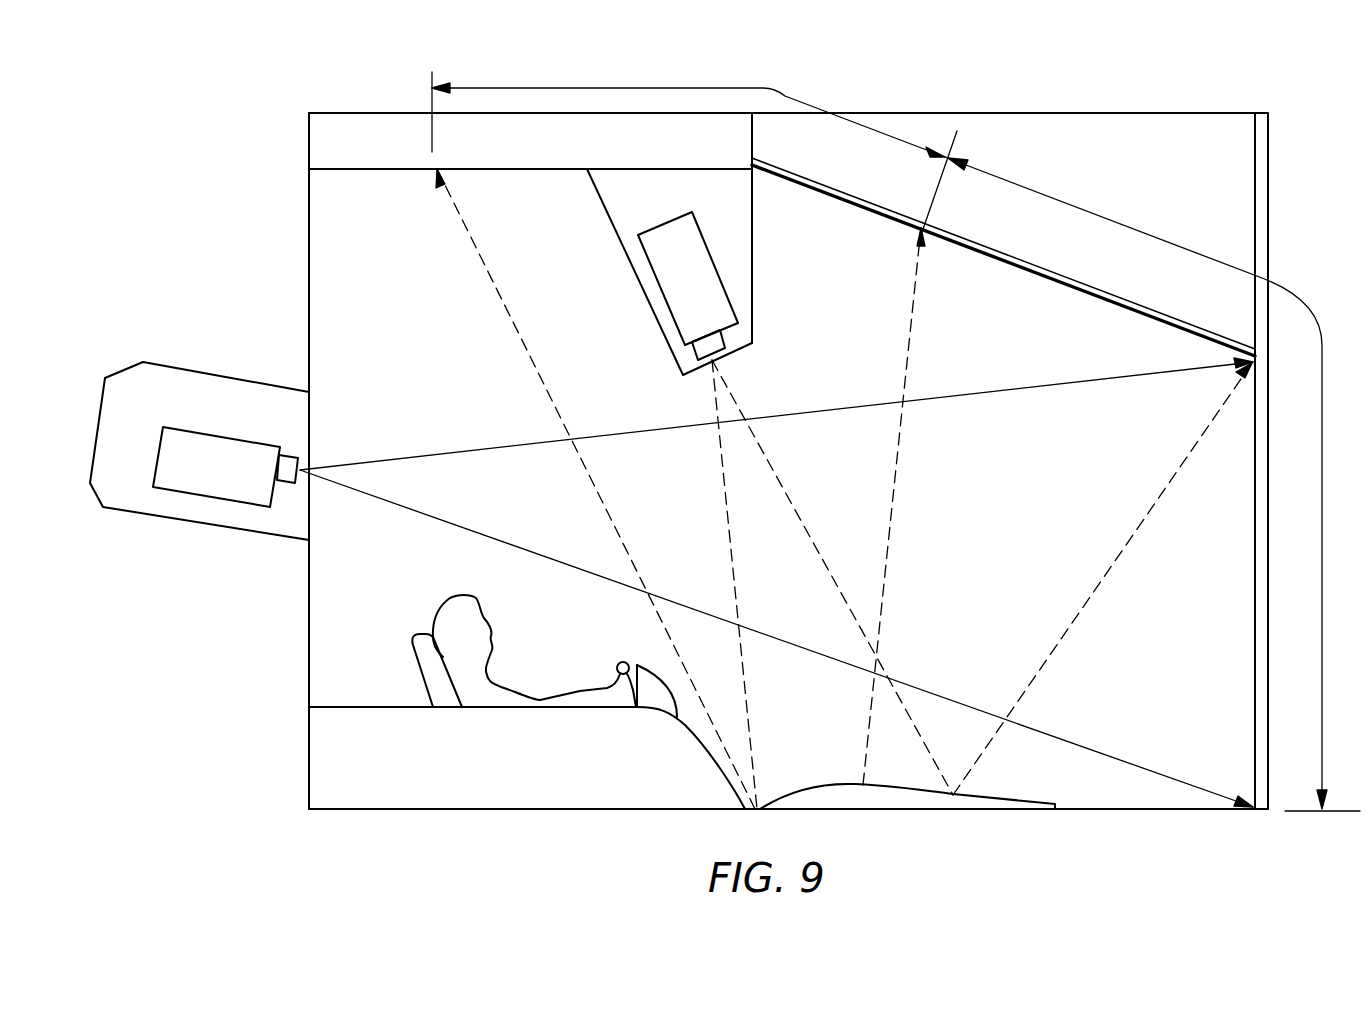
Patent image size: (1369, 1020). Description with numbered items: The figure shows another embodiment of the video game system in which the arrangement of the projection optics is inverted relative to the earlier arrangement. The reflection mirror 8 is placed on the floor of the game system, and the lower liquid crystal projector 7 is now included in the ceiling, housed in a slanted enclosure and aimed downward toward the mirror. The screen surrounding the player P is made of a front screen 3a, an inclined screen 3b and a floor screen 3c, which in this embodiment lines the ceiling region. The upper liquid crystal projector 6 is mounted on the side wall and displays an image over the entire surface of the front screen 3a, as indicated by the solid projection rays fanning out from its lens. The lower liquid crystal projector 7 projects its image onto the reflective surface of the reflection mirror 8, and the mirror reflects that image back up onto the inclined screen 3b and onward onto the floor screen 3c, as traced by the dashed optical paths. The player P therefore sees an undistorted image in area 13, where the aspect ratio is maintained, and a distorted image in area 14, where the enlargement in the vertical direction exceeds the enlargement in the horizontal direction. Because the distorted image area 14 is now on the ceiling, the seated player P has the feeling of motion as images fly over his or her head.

The front screen 3a is at (1255, 548).
The inclined screen 3b is at (1252, 342).
The floor screen 3c is at (747, 162).
The upper liquid crystal projector 6 is at (227, 481).
The lower liquid crystal projector 7 is at (697, 295).
The reflection mirror 8 is at (872, 800).
The undistorted image area 13 is at (1097, 208).
The distorted image area 14 is at (648, 87).
The passenger P is at (455, 615).